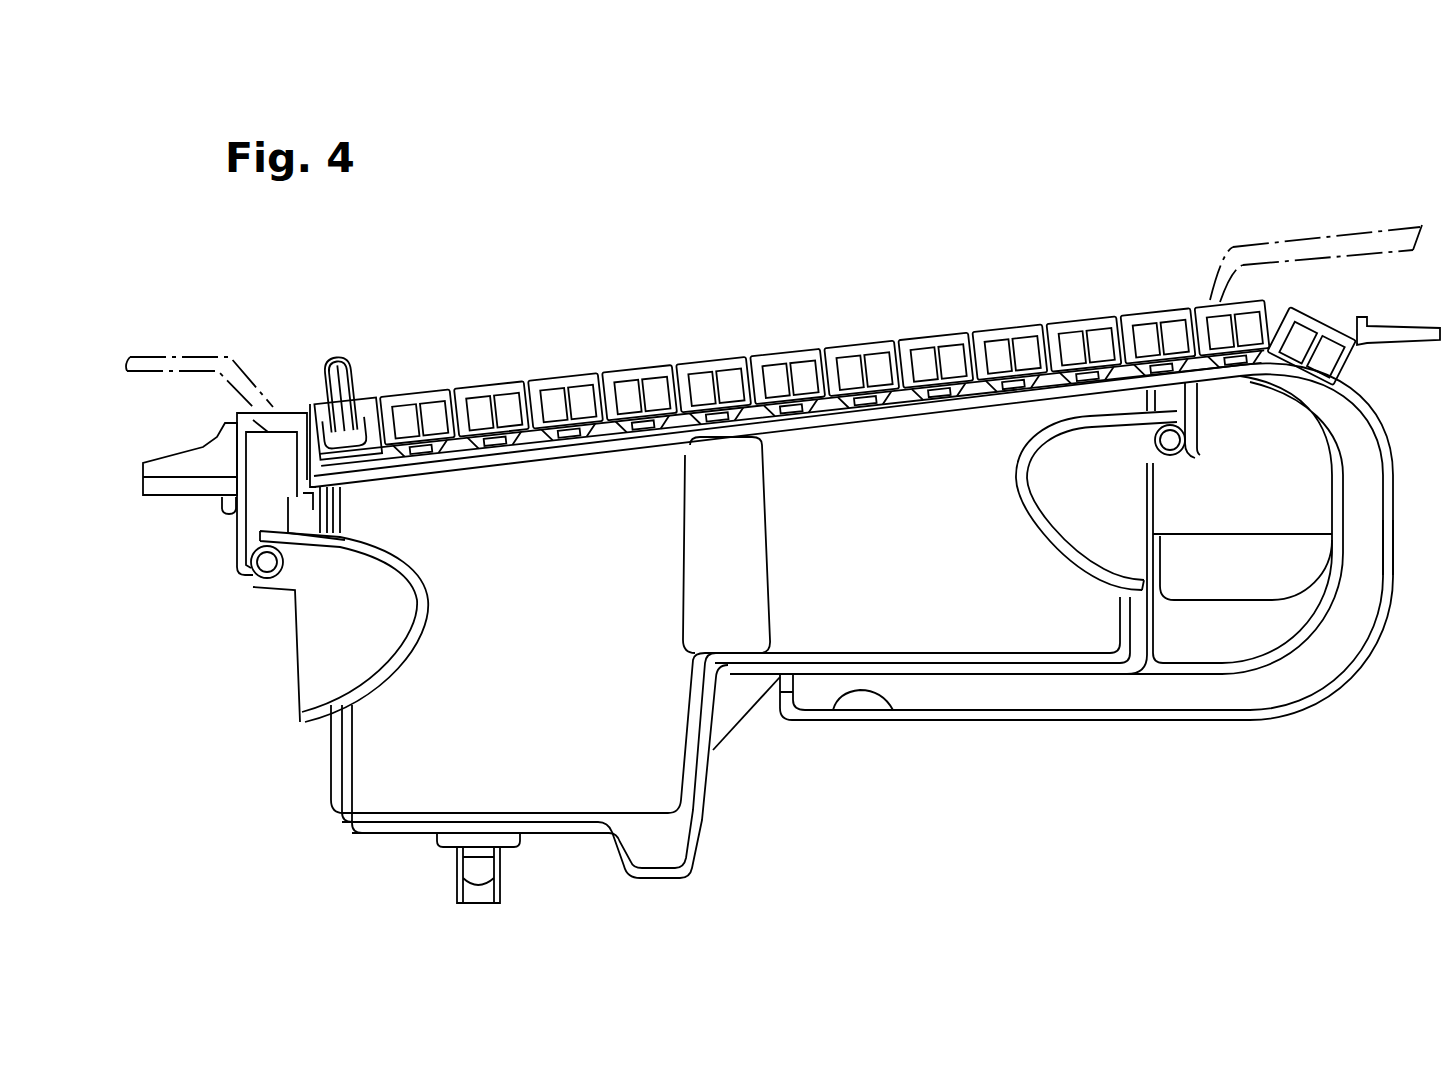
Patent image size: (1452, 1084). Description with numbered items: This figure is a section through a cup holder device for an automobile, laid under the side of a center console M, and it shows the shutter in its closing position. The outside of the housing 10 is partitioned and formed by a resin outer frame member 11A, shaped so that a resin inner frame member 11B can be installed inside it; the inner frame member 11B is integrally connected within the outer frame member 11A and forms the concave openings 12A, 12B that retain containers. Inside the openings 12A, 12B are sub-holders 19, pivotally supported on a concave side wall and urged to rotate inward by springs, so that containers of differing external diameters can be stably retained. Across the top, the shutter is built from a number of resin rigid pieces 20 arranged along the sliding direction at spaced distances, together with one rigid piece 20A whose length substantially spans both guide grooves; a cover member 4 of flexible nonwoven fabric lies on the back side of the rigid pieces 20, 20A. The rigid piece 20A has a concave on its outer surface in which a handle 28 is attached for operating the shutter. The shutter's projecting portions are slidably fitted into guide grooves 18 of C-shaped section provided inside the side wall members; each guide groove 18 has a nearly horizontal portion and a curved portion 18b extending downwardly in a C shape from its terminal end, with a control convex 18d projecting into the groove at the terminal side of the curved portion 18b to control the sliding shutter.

The handle 28 is at (340, 358).
The rigid piece 20A is at (367, 397).
The rigid pieces 20 is at (718, 357).
The cover member 4 is at (834, 400).
The guide groove 18 is at (902, 400).
The curved portion 18b is at (1324, 665).
The control convex 18d is at (893, 697).
The opening 12A is at (937, 578).
The opening 12B is at (577, 623).
The sub-holder 19 is at (1097, 543).
The housing 10 is at (236, 773).
The outer frame member 11A is at (328, 784).
The inner frame member 11B is at (340, 802).
The center console M is at (1297, 240).